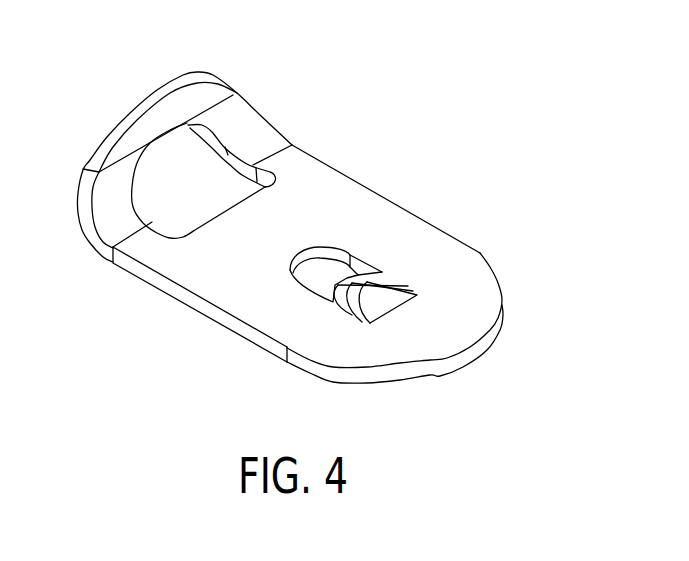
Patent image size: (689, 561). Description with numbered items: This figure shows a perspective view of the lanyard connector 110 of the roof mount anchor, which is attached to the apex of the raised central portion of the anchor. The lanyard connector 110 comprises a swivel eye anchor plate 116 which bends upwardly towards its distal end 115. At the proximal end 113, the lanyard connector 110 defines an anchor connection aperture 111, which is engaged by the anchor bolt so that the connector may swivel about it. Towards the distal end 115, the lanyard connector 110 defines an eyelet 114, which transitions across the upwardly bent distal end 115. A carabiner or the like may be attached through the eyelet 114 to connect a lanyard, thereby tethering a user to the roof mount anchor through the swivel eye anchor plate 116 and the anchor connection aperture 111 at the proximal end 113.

The lanyard connector 110 is at (417, 119).
The anchor connection aperture 111 is at (406, 223).
The proximal end 113 is at (510, 372).
The eyelet 114 is at (252, 129).
The distal end 115 is at (106, 84).
The swivel eye anchor plate 116 is at (225, 322).